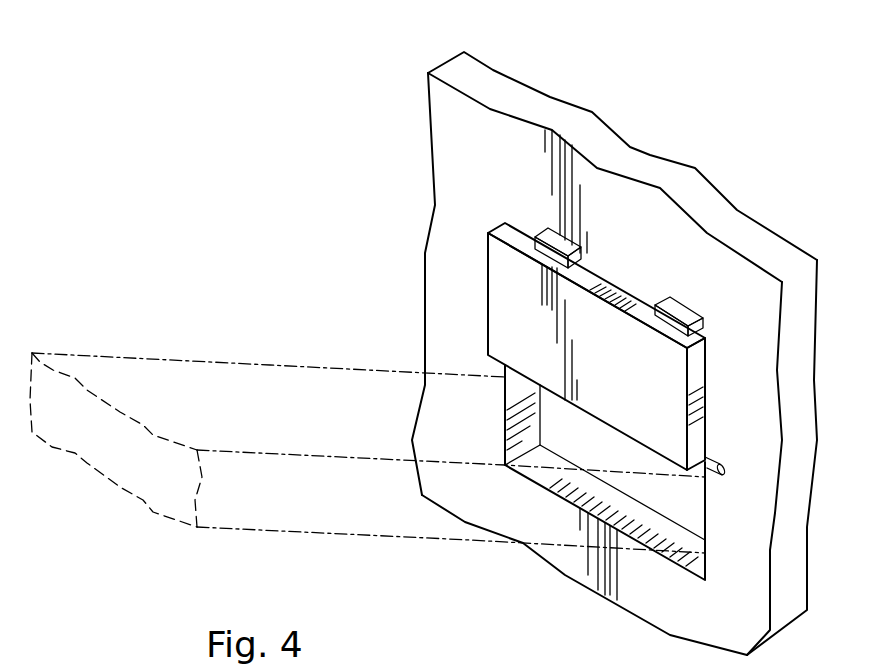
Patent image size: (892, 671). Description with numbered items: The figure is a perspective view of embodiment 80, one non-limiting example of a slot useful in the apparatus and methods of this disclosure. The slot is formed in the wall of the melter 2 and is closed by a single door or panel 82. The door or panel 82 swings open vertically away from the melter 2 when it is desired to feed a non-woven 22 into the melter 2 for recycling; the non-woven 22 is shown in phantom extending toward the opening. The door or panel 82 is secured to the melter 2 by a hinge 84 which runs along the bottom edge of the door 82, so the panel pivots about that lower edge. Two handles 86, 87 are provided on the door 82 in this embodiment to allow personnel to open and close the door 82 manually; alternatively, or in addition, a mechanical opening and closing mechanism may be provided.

The melter 2 is at (440, 260).
The non-woven 22 is at (218, 360).
The embodiment 80 is at (292, 178).
The door or panel 82 is at (598, 275).
The hinge 84 is at (714, 460).
The handle 86 is at (538, 230).
The handle 87 is at (685, 303).